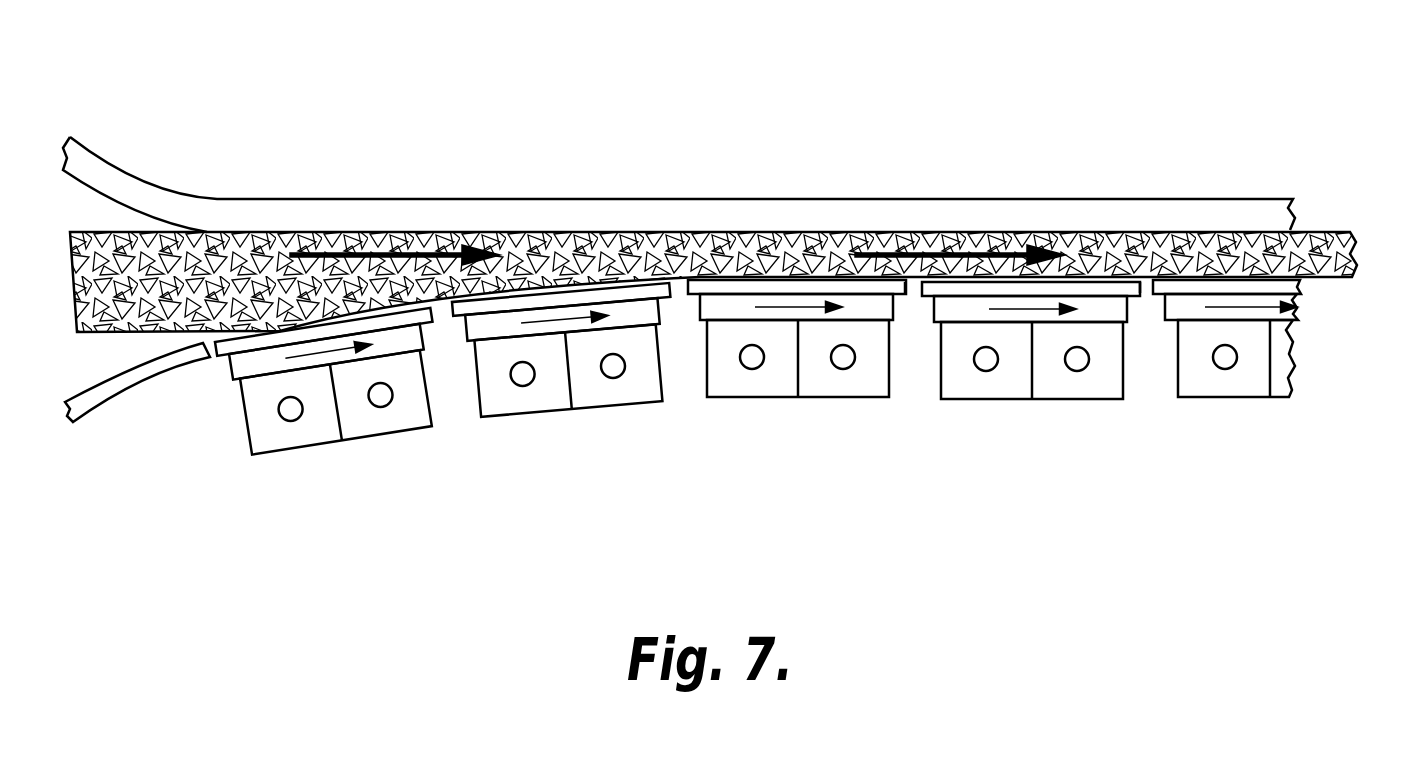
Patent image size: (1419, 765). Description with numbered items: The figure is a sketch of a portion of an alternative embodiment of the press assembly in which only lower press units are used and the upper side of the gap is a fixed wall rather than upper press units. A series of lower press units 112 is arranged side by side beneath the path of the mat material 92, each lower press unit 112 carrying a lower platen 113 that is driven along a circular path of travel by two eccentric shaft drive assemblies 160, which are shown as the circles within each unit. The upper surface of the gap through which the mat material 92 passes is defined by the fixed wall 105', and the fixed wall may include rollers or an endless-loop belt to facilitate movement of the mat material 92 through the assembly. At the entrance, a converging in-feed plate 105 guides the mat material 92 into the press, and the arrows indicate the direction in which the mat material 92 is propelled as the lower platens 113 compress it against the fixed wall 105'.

The mat material 92 is at (1322, 230).
The fixed wall 105' is at (679, 154).
The converging in-feed plate 105 is at (137, 419).
The lower press unit 112 is at (594, 406).
The lower platen 113 is at (903, 292).
The eccentric shaft drive assembly 160 is at (521, 378).